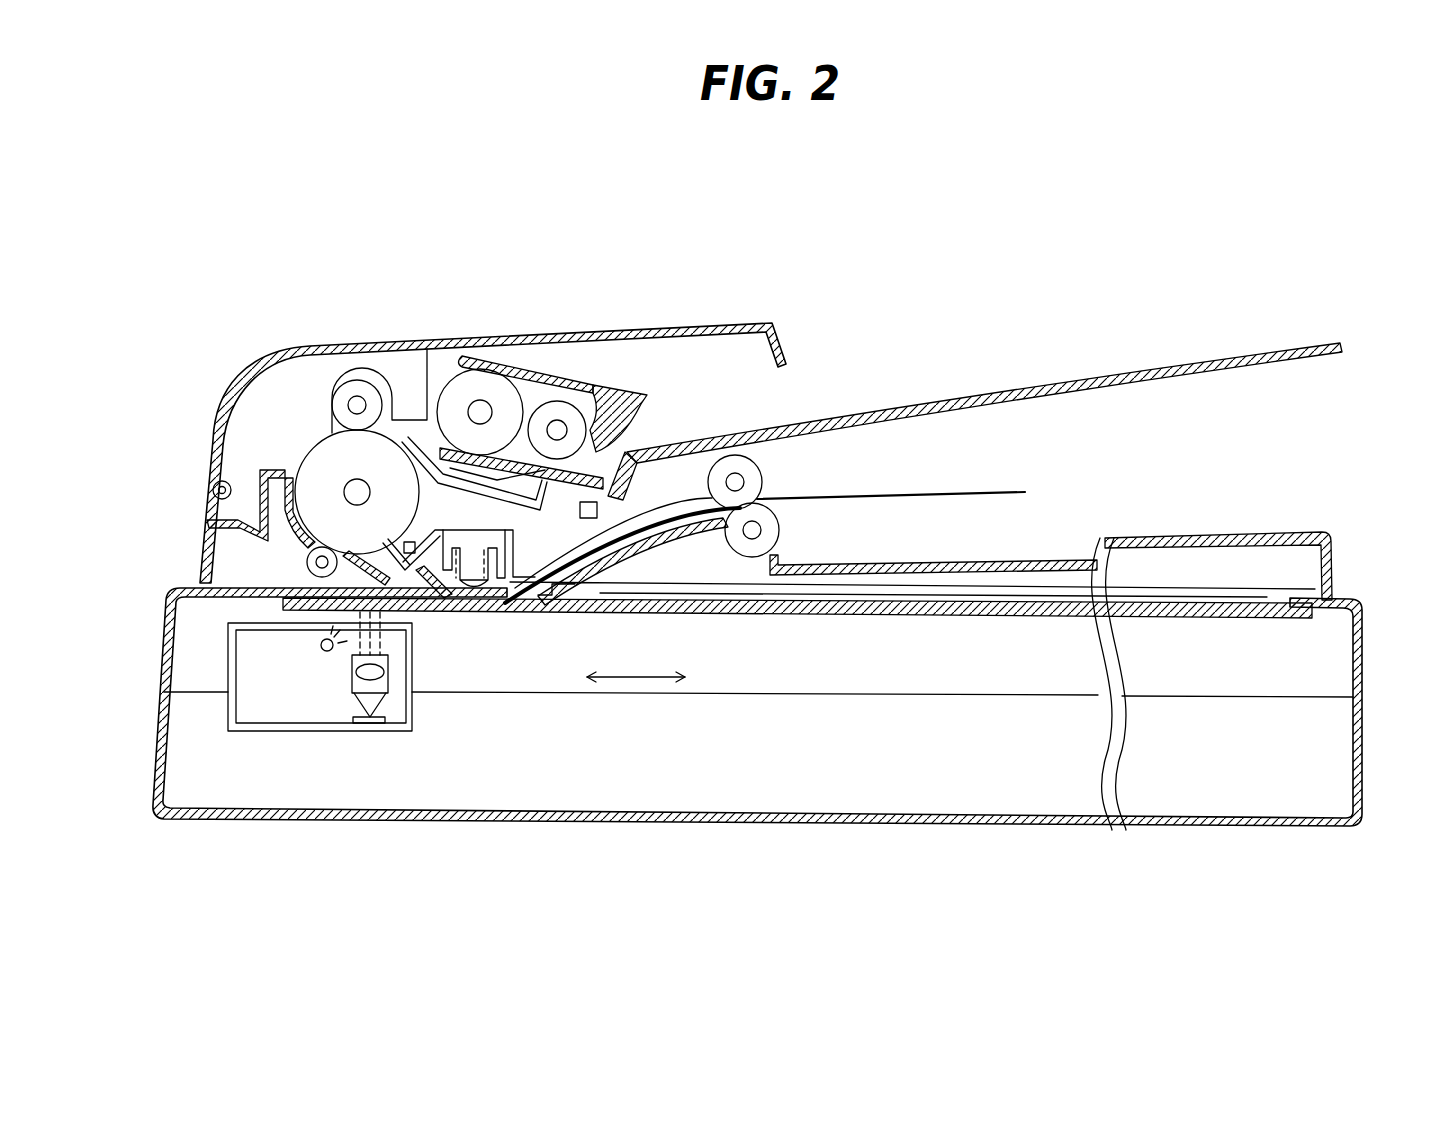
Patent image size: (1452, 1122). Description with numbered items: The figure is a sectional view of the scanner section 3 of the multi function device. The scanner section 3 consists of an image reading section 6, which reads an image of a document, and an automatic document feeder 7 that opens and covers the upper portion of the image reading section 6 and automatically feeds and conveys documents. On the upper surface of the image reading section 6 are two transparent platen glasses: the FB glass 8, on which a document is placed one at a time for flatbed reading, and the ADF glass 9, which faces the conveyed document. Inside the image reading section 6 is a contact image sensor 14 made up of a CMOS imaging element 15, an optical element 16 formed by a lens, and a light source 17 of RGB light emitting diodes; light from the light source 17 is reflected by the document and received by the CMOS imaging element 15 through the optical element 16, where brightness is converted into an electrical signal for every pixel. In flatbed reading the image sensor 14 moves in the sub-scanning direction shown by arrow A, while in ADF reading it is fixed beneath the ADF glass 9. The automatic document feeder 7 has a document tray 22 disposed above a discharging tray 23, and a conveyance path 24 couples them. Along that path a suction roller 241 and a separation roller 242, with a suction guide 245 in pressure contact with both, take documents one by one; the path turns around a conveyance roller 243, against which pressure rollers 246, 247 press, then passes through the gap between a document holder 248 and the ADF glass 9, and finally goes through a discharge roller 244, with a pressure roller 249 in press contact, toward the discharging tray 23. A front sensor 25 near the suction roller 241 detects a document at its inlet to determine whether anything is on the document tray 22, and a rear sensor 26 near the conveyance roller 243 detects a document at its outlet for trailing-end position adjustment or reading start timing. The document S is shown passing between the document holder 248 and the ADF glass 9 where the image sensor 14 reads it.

The scanner section 3 is at (184, 323).
The image reading section 6 is at (1385, 700).
The automatic document feeder (ADF) 7 is at (1323, 452).
The platen glass (FB glass) 8 is at (938, 627).
The platen glass (ADF glass) 9 is at (315, 613).
The image sensor 14 is at (268, 731).
The CMOS imaging element 15 is at (350, 716).
The optical element 16 is at (400, 735).
The light source 17 is at (322, 648).
The document tray 22 is at (1085, 379).
The discharging tray 23 is at (912, 565).
The conveyance path 24 is at (230, 510).
The front sensor 25 is at (600, 512).
The rear sensor 26 is at (410, 542).
The suction roller 241 is at (553, 400).
The separation roller 242 is at (430, 413).
The conveyance roller 243 is at (307, 440).
The discharge roller 244 is at (762, 474).
The suction guide 245 is at (432, 452).
The pressure roller 246 is at (352, 378).
The pressure roller 247 is at (306, 561).
The document holder 248 is at (480, 606).
The pressure roller 249 is at (779, 528).
The arrow A (sub-scanning direction) A is at (636, 662).
The document S is at (930, 497).